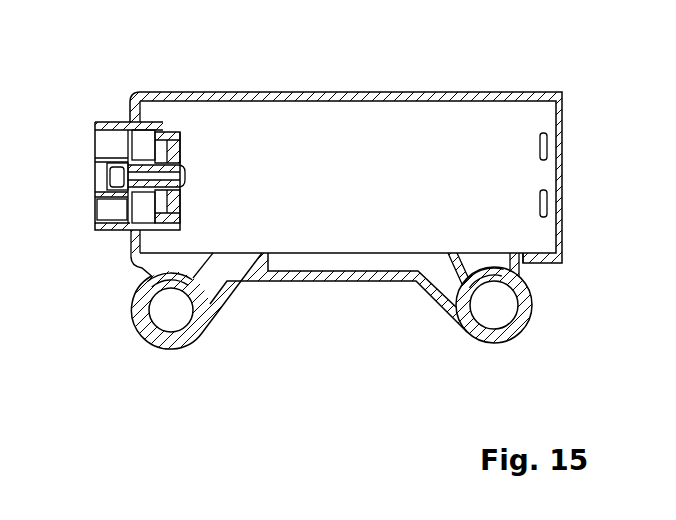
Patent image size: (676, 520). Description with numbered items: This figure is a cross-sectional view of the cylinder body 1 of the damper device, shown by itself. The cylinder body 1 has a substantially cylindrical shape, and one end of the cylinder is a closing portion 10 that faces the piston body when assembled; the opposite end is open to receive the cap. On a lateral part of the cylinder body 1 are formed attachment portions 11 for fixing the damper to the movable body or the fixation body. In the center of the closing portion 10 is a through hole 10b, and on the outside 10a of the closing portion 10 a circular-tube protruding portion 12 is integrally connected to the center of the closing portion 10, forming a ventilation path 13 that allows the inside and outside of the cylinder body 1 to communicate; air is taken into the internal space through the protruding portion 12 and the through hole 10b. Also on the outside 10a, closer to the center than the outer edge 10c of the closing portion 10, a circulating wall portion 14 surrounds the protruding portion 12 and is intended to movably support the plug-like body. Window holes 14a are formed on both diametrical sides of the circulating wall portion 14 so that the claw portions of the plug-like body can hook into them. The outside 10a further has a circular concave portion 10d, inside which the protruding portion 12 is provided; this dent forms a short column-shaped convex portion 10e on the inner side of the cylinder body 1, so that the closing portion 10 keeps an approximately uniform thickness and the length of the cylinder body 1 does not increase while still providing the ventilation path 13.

The cylinder body 1 is at (340, 92).
The closing portion 10 is at (128, 116).
The outside of the closing portion 10a is at (130, 108).
The through hole 10b is at (187, 178).
The outer edge of the closing portion 10c is at (130, 113).
The concave portion 10d is at (143, 137).
The convex portion 10e is at (182, 134).
The attachment portion 11 is at (478, 336).
The protruding portion 12 is at (126, 206).
The ventilation path 13 is at (180, 192).
The circulating wall portion 14 is at (95, 228).
The window hole 14a is at (113, 173).